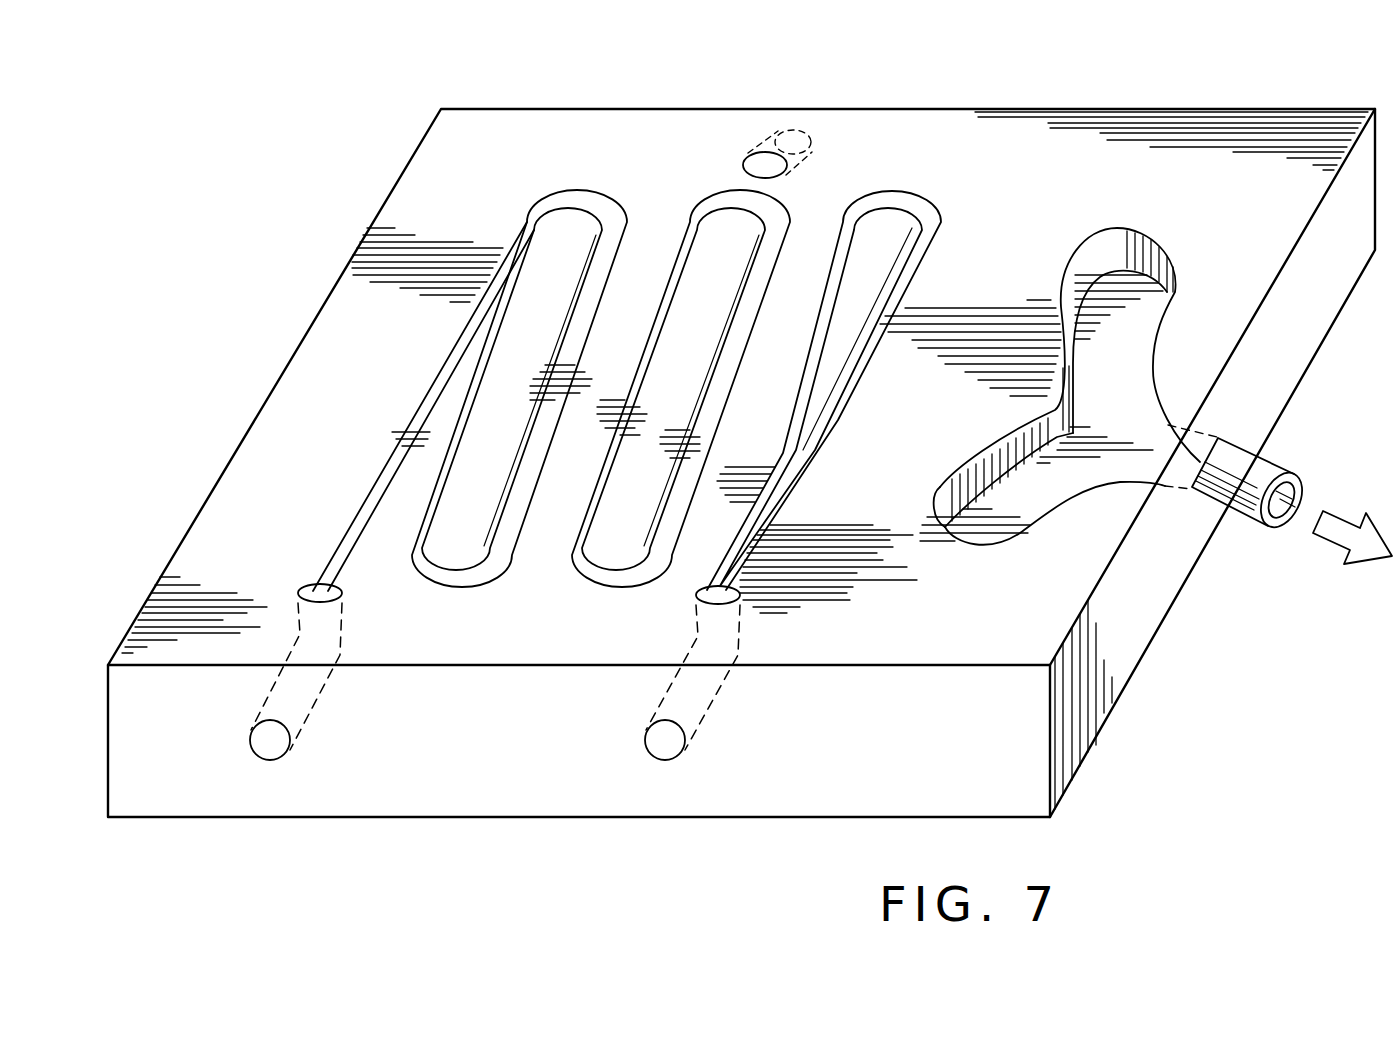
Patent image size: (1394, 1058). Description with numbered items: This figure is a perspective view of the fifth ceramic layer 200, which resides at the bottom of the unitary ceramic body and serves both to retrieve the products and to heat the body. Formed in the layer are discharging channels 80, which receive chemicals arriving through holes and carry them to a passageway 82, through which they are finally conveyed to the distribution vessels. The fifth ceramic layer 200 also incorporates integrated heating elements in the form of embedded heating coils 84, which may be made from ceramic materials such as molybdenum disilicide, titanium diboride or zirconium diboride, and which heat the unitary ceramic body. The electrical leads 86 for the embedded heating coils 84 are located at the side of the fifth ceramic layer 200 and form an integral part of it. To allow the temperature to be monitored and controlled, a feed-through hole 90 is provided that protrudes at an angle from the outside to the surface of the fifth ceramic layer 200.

The fifth ceramic layer 200 is at (1172, 769).
The embedded heating coils 84 is at (827, 410).
The electrical leads 86 is at (270, 748).
The feed-through hole 90 is at (755, 160).
The discharging channels 80 is at (998, 523).
The passageway 82 is at (1277, 465).